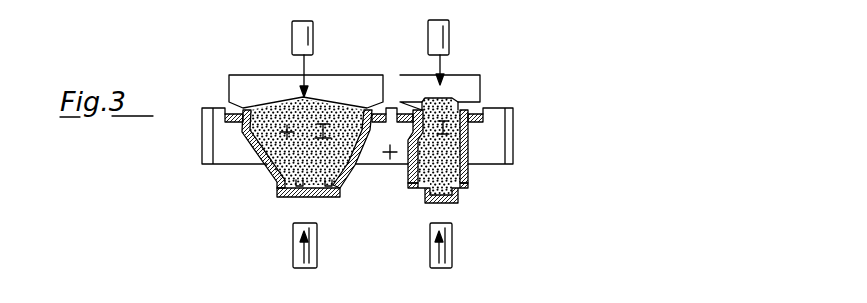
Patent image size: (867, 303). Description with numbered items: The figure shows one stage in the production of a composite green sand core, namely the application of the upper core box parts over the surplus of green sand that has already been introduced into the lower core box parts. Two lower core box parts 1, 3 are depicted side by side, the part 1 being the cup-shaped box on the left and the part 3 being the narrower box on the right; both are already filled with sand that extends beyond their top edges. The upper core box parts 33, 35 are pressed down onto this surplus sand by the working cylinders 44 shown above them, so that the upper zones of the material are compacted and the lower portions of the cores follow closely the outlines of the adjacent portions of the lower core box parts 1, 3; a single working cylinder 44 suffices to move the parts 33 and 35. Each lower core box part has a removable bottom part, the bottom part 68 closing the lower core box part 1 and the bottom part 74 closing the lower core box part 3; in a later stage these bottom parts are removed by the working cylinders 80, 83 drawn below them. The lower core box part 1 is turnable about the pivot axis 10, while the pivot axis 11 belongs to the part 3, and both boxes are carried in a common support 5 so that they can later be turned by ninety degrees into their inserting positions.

The lower core box part 1 is at (263, 182).
The lower core box part 3 is at (470, 176).
The mold carrier plate 5 is at (513, 118).
The pivot axis 10 is at (256, 168).
The pivot axis 11 is at (410, 122).
The upper core box part 33 is at (240, 90).
The upper core box part 35 is at (480, 83).
The working cylinder 44 is at (313, 43).
The bottom part 68 is at (331, 197).
The bottom part 74 is at (456, 203).
The working cylinder 80 is at (295, 256).
The working cylinder 83 is at (452, 256).